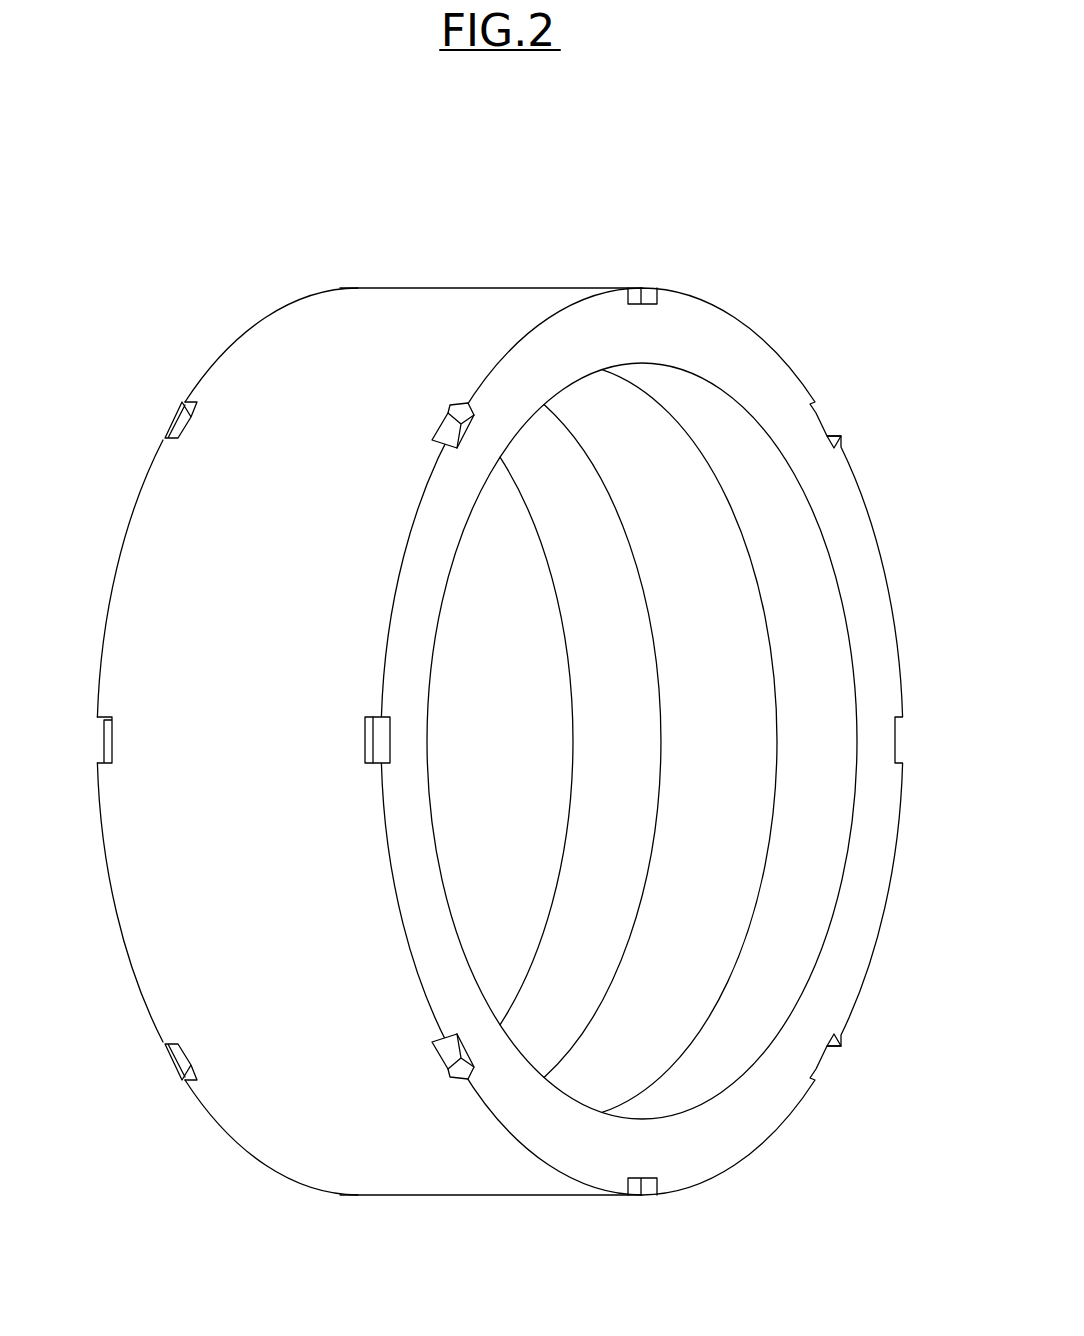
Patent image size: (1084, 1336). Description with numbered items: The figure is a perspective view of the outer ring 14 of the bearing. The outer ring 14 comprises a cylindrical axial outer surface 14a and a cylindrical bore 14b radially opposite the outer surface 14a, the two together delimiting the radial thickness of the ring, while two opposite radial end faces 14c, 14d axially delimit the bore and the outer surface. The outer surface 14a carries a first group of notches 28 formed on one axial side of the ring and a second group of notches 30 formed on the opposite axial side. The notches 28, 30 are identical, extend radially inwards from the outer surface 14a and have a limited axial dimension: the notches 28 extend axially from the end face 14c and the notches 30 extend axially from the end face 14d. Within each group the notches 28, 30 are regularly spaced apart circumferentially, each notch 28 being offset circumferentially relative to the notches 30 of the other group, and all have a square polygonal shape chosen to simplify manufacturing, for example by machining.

The outer ring 14 is at (503, 717).
The axial outer surface 14a is at (392, 330).
The bore 14b is at (782, 542).
The radial end face 14c is at (110, 906).
The radial end face 14d is at (874, 892).
The notches 28 is at (183, 425).
The notches 30 is at (449, 407).